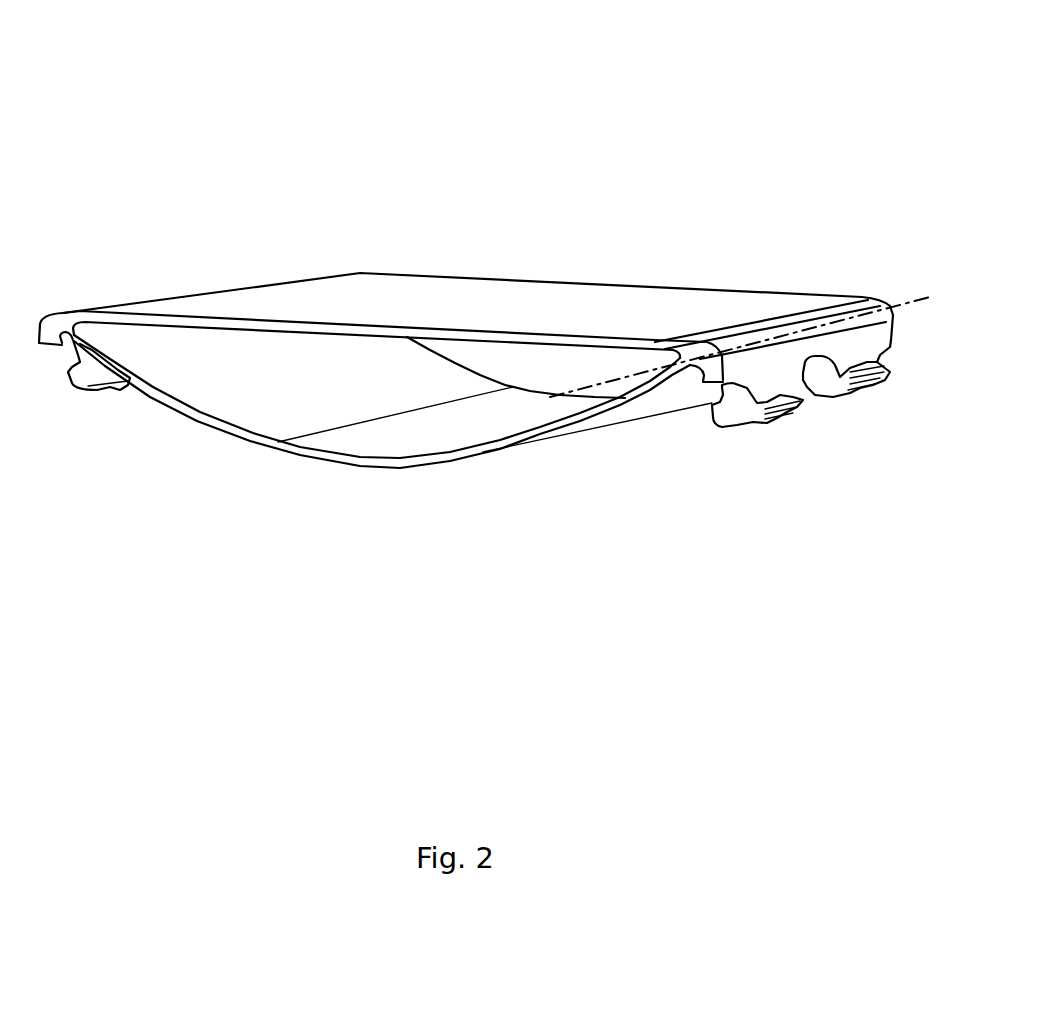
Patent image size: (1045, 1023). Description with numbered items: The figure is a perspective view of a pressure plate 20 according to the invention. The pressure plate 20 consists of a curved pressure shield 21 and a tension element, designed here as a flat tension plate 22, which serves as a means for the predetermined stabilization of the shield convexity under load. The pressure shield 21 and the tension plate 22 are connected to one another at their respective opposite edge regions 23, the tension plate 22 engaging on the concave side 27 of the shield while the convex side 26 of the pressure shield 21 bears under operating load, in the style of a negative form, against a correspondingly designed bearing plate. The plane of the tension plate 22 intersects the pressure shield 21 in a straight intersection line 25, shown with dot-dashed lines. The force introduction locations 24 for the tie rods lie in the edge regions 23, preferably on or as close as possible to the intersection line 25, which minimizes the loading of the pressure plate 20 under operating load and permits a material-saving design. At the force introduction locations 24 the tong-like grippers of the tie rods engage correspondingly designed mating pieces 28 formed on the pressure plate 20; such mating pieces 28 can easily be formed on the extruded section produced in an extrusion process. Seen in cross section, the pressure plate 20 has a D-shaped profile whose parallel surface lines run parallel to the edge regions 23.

The pressure plate 20 is at (686, 175).
The pressure shield 21 is at (399, 464).
The tension plate 22 is at (457, 295).
The edge regions 23 is at (226, 290).
The force introduction locations 24 is at (767, 545).
The intersection line 25 is at (916, 296).
The convex side 26 is at (264, 478).
The concave side 27 is at (150, 339).
The mating pieces 28 is at (792, 404).